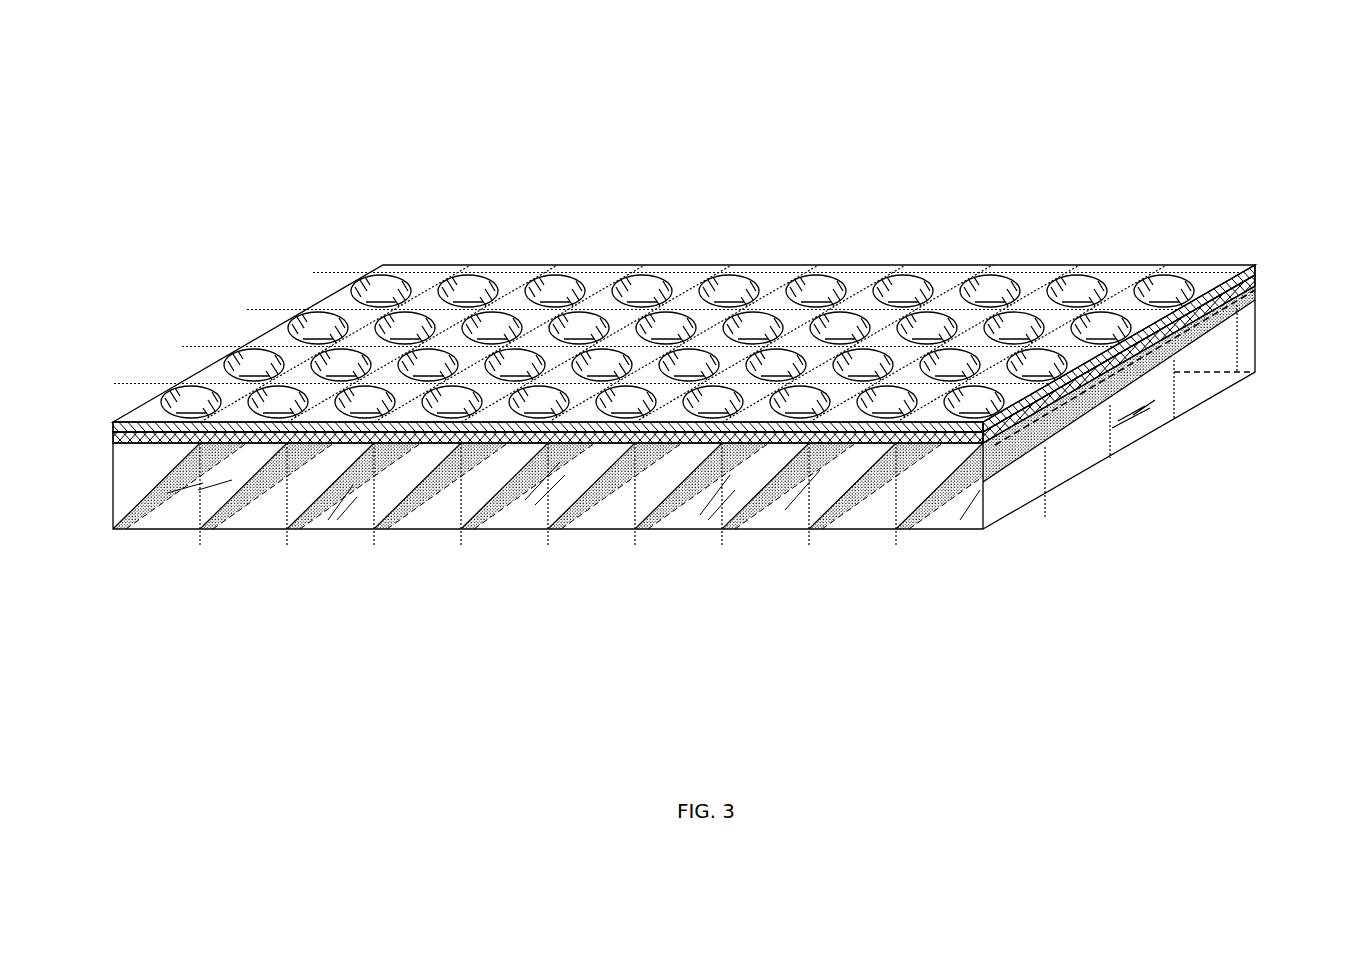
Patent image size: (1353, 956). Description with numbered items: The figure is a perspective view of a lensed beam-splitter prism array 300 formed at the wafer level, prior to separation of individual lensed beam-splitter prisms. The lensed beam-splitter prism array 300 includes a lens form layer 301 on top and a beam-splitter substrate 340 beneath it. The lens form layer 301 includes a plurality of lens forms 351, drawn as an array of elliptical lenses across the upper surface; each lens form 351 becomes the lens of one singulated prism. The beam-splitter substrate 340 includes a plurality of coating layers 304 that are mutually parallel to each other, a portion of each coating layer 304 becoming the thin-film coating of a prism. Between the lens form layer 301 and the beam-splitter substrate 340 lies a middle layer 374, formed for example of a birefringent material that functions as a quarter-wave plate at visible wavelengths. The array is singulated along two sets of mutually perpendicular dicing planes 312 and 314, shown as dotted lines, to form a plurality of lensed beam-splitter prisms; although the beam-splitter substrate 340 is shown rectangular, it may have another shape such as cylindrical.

The lensed beam-splitter prism array 300 is at (265, 160).
The lens form layer 301 is at (1255, 268).
The middle layer 374 is at (1257, 279).
The beam-splitter substrate 340 is at (1255, 328).
The coating layer 304 is at (157, 485).
The dicing planes 312 is at (852, 225).
The dicing planes 314 is at (182, 348).
The lens forms 351 is at (709, 346).